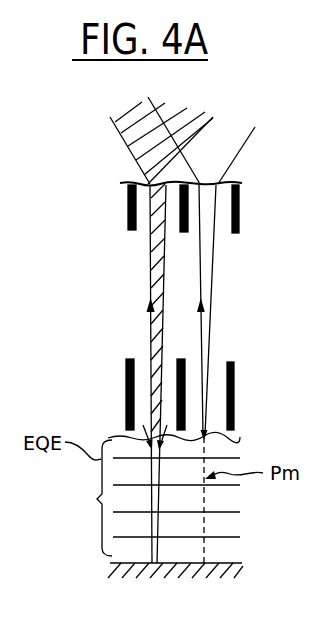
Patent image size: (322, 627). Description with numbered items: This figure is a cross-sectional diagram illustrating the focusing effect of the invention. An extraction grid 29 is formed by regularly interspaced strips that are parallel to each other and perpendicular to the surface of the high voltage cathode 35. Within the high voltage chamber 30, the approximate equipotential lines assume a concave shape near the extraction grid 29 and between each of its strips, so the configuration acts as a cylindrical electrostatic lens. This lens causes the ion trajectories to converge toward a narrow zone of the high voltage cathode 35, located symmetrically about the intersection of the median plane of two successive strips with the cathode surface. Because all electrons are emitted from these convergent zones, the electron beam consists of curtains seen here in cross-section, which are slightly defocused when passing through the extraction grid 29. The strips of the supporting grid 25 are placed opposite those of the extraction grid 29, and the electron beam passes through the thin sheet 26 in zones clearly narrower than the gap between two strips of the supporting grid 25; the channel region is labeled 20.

The channel electron multiplier / microchannel 20 is at (130, 291).
The supporting grid 25 is at (128, 203).
The thin sheet 26 is at (120, 182).
The extraction grid 29 is at (126, 380).
The high voltage chamber 30 is at (88, 521).
The high voltage cathode 35 is at (118, 554).